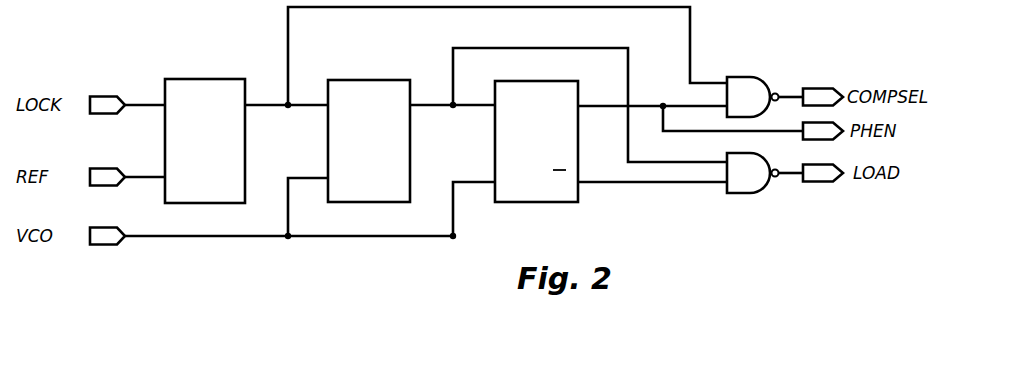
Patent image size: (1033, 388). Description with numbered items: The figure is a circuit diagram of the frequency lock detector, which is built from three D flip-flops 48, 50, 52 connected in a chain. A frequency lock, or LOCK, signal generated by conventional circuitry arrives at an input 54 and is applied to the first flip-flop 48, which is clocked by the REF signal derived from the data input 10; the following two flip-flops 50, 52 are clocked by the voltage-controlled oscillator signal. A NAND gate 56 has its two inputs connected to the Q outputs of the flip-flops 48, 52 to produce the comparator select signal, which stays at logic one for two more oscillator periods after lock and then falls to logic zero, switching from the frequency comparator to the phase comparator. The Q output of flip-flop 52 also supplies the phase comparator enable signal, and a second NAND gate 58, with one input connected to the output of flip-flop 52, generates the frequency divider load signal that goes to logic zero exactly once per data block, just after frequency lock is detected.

The input 54 is at (107, 96).
The data input 10 is at (106, 168).
The first D flip-flop 48 is at (245, 137).
The D flip-flop 50 is at (410, 140).
The D flip-flop 52 is at (542, 203).
The NAND gate 56 is at (748, 83).
The NAND gate 58 is at (748, 183).